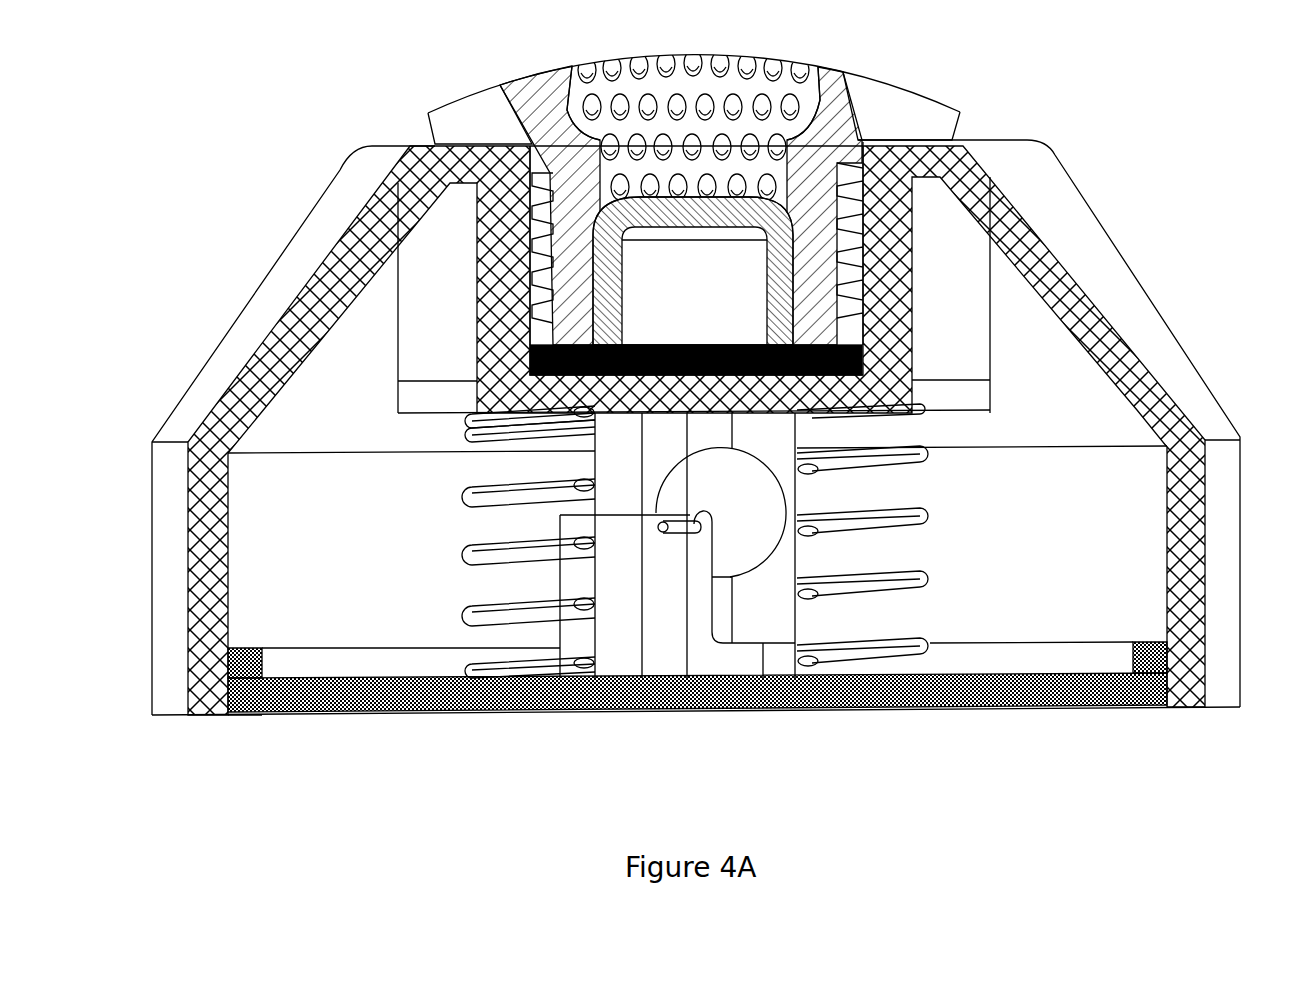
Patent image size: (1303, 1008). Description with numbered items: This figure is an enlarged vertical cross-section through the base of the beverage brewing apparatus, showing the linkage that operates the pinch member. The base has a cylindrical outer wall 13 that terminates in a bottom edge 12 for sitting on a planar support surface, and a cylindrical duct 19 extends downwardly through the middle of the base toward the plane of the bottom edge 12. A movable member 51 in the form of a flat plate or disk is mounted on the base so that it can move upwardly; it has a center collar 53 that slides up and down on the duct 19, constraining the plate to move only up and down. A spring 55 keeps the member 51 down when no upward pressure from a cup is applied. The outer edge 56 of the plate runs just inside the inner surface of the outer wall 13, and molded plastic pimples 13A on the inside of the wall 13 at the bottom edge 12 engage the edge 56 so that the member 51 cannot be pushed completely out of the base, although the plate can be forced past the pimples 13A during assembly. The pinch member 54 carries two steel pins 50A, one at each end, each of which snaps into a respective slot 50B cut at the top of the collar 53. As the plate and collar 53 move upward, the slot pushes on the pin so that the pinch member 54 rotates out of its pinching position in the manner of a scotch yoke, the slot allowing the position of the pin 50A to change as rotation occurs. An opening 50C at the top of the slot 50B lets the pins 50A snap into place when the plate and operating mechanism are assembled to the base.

The bottom edge 12 is at (210, 717).
The outer wall 13 is at (203, 583).
The molded plastic pimples 13A is at (243, 717).
The duct 19 is at (768, 572).
The steel pins 50A is at (663, 527).
The slot 50B is at (683, 532).
The opening 50C is at (690, 518).
The movable member 51 is at (373, 715).
The center collar 53 is at (700, 588).
The pinch member 54 is at (787, 490).
The spring 55 is at (933, 588).
The outer edge 56 is at (248, 648).